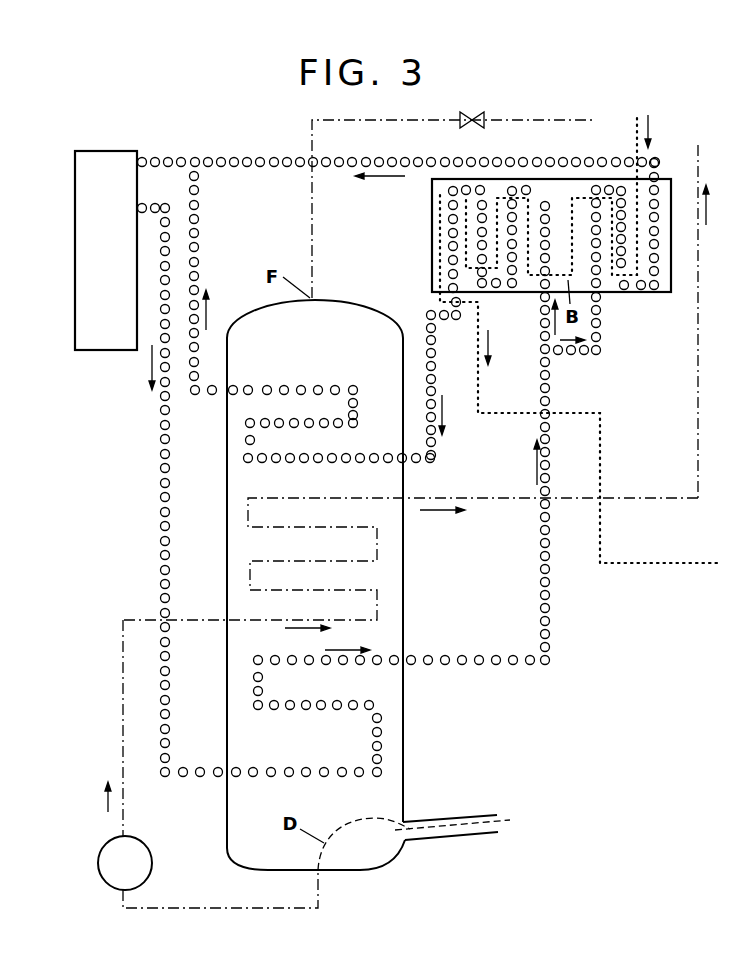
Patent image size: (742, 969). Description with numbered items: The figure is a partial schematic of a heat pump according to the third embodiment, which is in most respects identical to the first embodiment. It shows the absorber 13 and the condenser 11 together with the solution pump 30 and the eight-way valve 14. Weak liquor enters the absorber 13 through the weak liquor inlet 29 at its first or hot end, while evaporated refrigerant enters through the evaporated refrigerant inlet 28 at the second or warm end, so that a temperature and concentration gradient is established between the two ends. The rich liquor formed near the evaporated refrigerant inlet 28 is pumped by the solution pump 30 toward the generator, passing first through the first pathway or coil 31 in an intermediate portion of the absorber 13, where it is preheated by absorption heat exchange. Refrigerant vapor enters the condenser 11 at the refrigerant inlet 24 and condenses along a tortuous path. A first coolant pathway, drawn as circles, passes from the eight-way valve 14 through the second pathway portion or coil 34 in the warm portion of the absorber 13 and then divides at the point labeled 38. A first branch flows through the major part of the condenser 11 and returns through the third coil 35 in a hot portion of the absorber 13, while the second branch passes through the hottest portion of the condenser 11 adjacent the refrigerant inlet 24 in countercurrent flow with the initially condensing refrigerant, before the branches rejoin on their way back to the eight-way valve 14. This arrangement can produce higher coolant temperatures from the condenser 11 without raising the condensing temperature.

The condenser 11 is at (419, 224).
The absorber 13 is at (244, 312).
The eight-way valve 14 is at (107, 352).
The refrigerant inlet 24 is at (636, 178).
The evaporated refrigerant inlet 28 is at (405, 822).
The weak liquor inlet 29 is at (316, 298).
The solution pump 30 is at (148, 846).
The first pathway or coil 31 is at (248, 512).
The second pathway portion or coil 34 is at (255, 674).
The third pathway portion or coil 35 is at (318, 390).
The branch point 38 is at (540, 351).